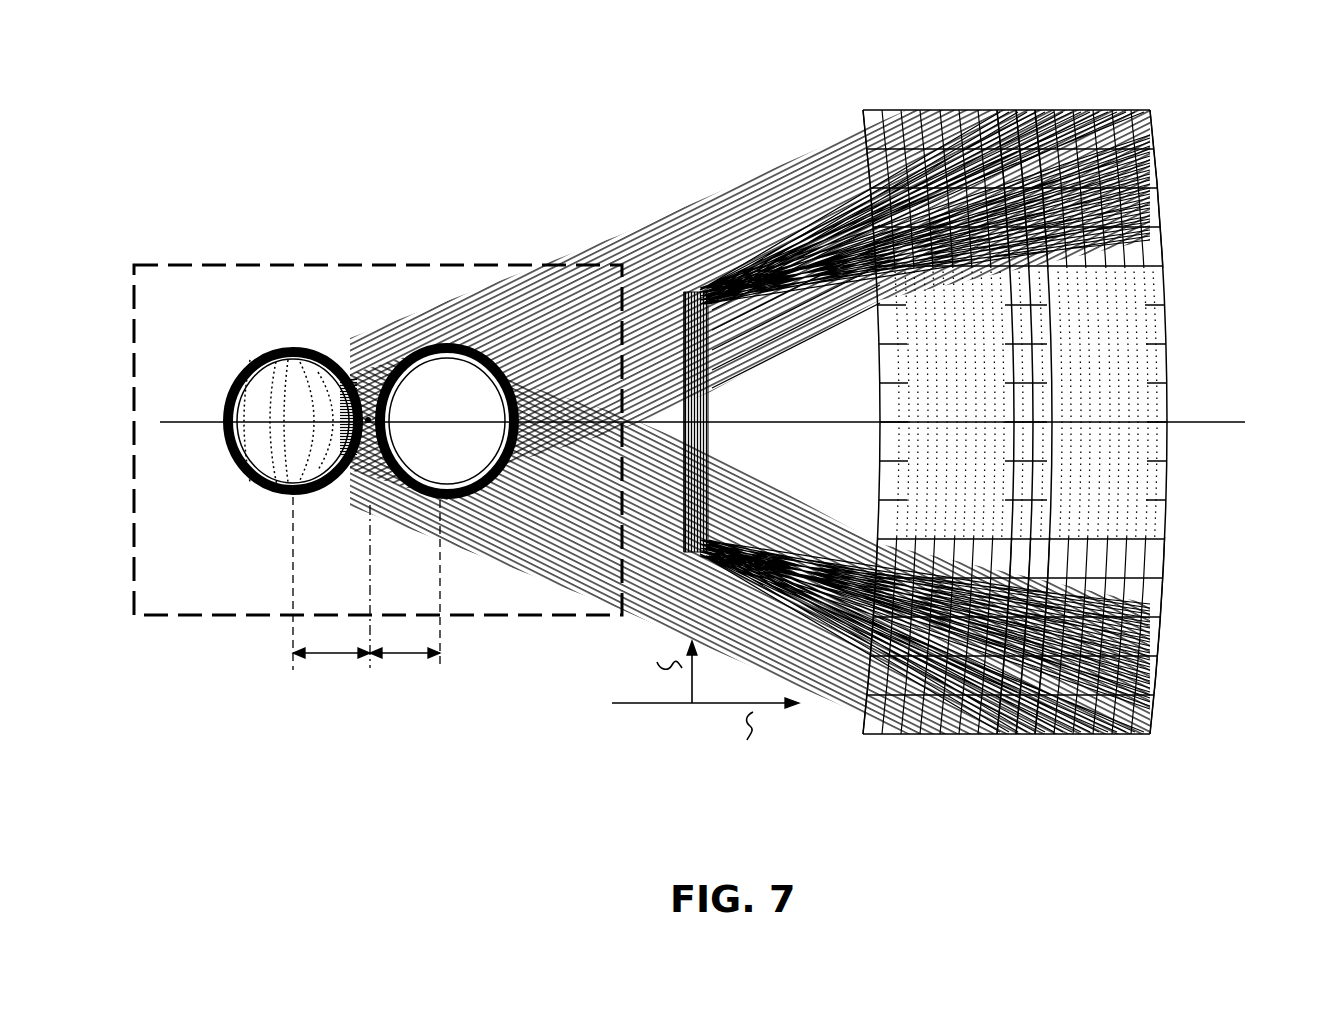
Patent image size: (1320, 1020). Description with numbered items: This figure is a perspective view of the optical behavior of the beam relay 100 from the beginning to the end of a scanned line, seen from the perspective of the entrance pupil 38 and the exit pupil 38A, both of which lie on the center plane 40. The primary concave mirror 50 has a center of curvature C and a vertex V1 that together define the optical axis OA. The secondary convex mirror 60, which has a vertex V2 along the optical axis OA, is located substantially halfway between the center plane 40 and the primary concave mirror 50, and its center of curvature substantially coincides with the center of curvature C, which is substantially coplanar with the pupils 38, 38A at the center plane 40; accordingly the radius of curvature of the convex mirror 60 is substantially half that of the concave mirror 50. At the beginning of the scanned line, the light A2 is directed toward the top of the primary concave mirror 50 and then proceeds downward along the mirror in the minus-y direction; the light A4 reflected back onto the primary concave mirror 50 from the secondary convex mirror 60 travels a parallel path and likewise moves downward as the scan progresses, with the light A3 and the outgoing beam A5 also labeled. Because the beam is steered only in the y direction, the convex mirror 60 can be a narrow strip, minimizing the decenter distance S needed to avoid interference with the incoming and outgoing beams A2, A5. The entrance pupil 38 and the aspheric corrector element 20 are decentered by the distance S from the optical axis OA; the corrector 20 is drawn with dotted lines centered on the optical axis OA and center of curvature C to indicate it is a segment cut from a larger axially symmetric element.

The beam relay 100 is at (452, 124).
The center plane 40 is at (197, 262).
The aspheric corrector element 20 is at (275, 388).
The entrance pupil 38 is at (250, 490).
The exit pupil 38A is at (431, 503).
The secondary convex mirror 60 is at (708, 432).
The primary concave mirror 50 is at (1160, 307).
The light A2 is at (628, 238).
The light A3 is at (892, 182).
The light A4 is at (1098, 180).
The outgoing beam A5 is at (810, 357).
The vertex of primary concave mirror V1 is at (1035, 425).
The vertex of secondary convex mirror V2 is at (710, 418).
The optical axis OA is at (1180, 428).
The center of curvature C is at (376, 395).